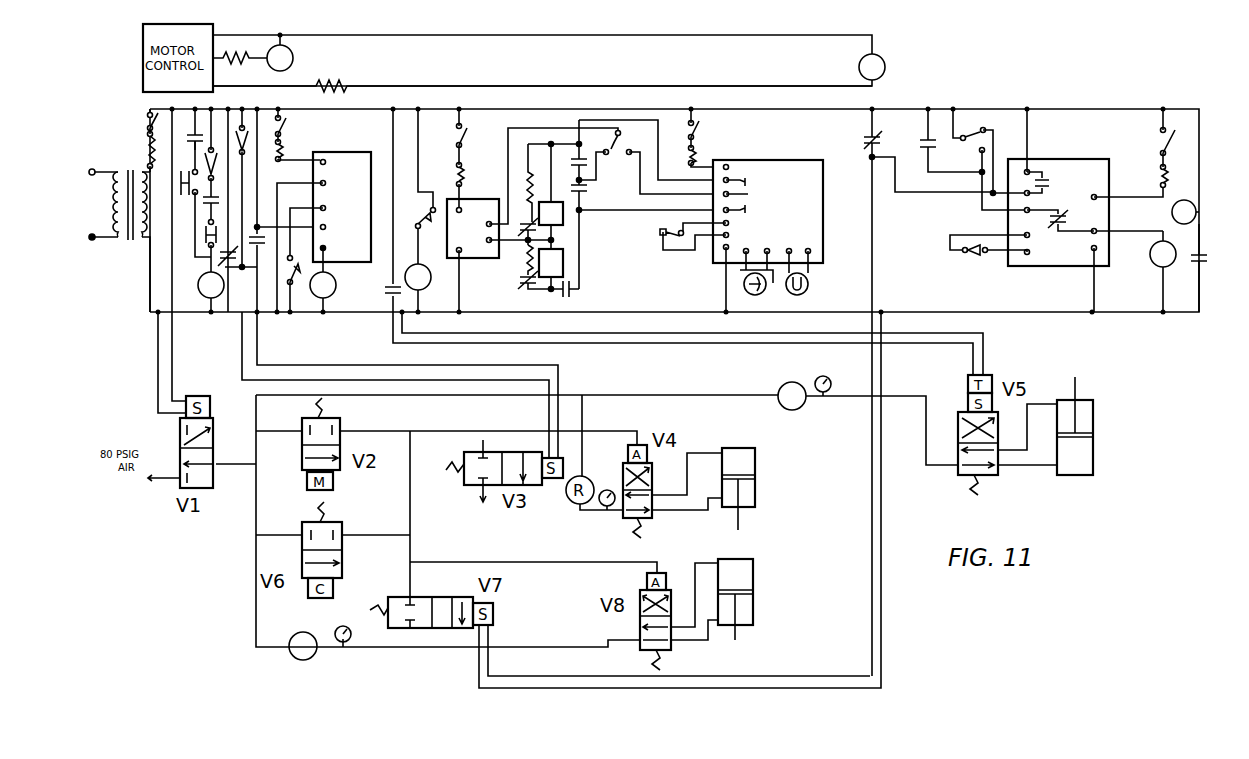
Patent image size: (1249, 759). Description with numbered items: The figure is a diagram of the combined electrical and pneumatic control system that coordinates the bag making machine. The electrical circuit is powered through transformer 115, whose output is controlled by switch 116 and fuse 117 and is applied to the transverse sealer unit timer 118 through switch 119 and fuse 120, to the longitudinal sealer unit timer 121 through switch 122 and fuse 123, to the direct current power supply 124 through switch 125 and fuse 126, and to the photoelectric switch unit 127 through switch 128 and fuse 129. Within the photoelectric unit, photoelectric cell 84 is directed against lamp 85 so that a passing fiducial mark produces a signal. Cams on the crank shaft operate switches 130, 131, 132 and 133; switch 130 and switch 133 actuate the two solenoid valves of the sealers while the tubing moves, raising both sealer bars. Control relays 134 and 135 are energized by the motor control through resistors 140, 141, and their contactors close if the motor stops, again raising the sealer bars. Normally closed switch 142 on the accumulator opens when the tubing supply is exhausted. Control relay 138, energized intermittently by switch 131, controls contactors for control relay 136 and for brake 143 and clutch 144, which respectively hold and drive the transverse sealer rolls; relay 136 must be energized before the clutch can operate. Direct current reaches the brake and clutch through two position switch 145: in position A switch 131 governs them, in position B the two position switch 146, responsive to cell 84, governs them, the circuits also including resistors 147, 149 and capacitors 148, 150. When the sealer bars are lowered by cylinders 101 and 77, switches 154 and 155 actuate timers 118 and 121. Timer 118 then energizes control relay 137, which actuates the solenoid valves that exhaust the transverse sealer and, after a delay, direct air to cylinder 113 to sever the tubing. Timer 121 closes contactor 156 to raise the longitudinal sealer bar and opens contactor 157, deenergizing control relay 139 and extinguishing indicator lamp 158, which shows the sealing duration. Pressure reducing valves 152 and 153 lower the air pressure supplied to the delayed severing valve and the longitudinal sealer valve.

The air piston-cylinder unit 77 is at (755, 574).
The photoelectric cell 84 is at (760, 294).
The lamp 85 is at (808, 288).
The piston-cylinder unit 101 is at (755, 468).
The air piston-cylinder unit 113 is at (1094, 456).
The transformer 115 is at (124, 240).
The switch 116 is at (147, 118).
The fuse 117 is at (146, 151).
The transverse sealer unit timer 118 is at (357, 269).
The switch 119 is at (284, 126).
The fuse 120 is at (286, 146).
The longitudinal sealer unit timer 121 is at (1166, 143).
The switch 122 is at (1160, 132).
The fuse 123 is at (1160, 186).
The direct current power supply 124 is at (476, 199).
The switch 125 is at (468, 137).
The fuse 126 is at (454, 188).
The photoelectric switch unit 127 is at (829, 197).
The switch 128 is at (696, 130).
The fuse 129 is at (692, 150).
The switch 130 is at (254, 178).
The switch 131 is at (428, 226).
The switch 132 is at (660, 238).
The switch 133 is at (987, 131).
The control relay 134 is at (293, 58).
The control relay 135 is at (885, 67).
The control relay 136 is at (208, 208).
The control relay 137 is at (260, 250).
The control relay 138 is at (425, 288).
The control relay 139 is at (920, 140).
The resistor 140 is at (178, 212).
The resistor 141 is at (350, 86).
The switch 142 is at (206, 199).
The brake 143 is at (551, 196).
The clutch 144 is at (551, 269).
The two position switch 145 is at (614, 158).
The two position switch 146 is at (753, 194).
The resistor 147 is at (553, 182).
The capacitor 148 is at (519, 236).
The resistor 149 is at (522, 262).
The capacitor 150 is at (520, 286).
The pressure reducing valve 152 is at (800, 406).
The pressure reducing valve 153 is at (316, 656).
The switch 154 is at (299, 297).
The switch 155 is at (966, 258).
The contactor 156 is at (1048, 186).
The contactor 157 is at (1057, 235).
The indicator lamp 158 is at (1199, 209).